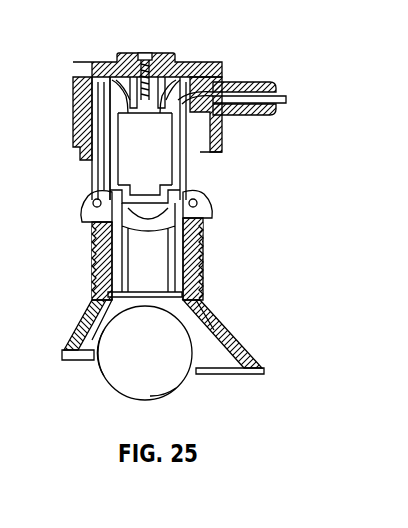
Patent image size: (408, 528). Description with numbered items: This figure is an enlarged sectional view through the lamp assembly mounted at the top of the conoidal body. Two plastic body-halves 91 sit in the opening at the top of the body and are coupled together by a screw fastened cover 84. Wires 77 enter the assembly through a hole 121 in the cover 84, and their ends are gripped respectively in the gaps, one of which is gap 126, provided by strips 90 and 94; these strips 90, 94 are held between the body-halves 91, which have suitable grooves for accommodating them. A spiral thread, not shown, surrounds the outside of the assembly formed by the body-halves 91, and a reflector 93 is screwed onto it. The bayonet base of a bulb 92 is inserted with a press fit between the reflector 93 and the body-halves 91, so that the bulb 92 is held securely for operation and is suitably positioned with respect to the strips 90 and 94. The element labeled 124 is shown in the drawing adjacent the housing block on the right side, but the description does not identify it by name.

The cover 84 is at (106, 76).
The hole 121 is at (236, 84).
The wires 77 is at (262, 98).
The gap 126 is at (115, 136).
The housing block 124 is at (193, 158).
The strip 94 is at (108, 176).
The strip 90 is at (184, 162).
The body-halves 91 is at (90, 226).
The reflector 93 is at (208, 312).
The bulb 92 is at (156, 368).